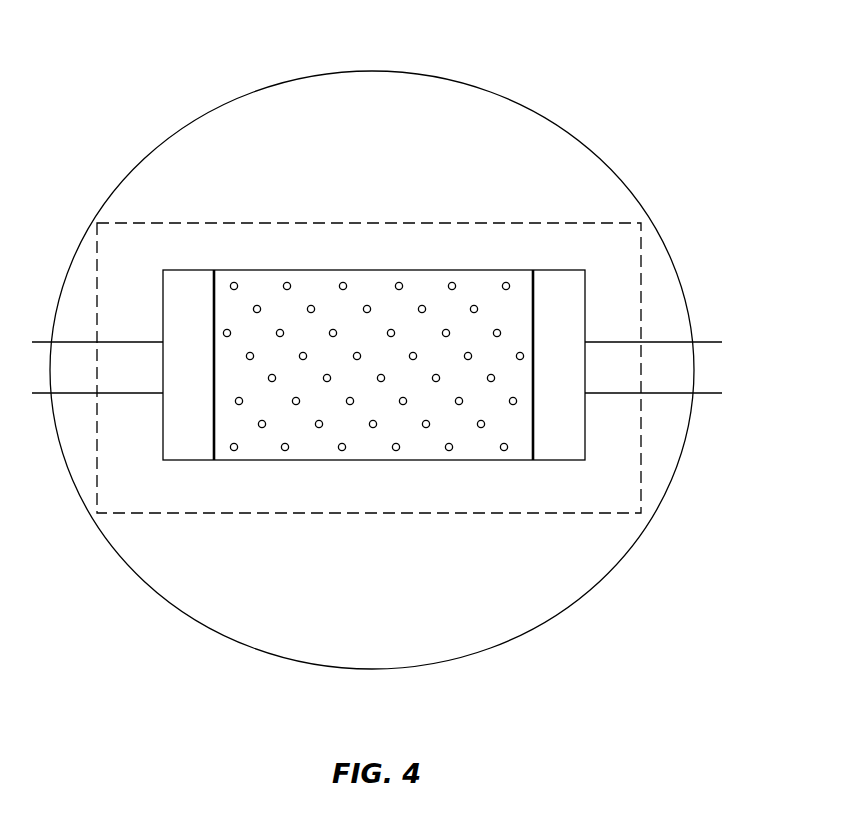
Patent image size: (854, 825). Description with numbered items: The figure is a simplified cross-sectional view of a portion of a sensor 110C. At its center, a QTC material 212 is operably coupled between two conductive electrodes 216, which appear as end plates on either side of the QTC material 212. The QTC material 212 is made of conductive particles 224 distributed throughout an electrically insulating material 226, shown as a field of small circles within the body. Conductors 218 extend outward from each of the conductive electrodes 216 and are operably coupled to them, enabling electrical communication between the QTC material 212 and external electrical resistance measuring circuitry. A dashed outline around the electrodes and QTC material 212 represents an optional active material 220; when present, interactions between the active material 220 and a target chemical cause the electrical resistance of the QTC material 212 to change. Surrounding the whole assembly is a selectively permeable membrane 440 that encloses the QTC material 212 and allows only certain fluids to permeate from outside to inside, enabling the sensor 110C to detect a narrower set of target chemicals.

The sensor 110C is at (153, 96).
The selectively permeable membrane 440 is at (495, 90).
The active material 220 is at (267, 222).
The conductors 218 is at (75, 342).
The QTC material 212 is at (319, 270).
The conductive electrodes 216 is at (187, 270).
The electrically insulating material 226 is at (478, 447).
The conductive particles 224 is at (506, 282).